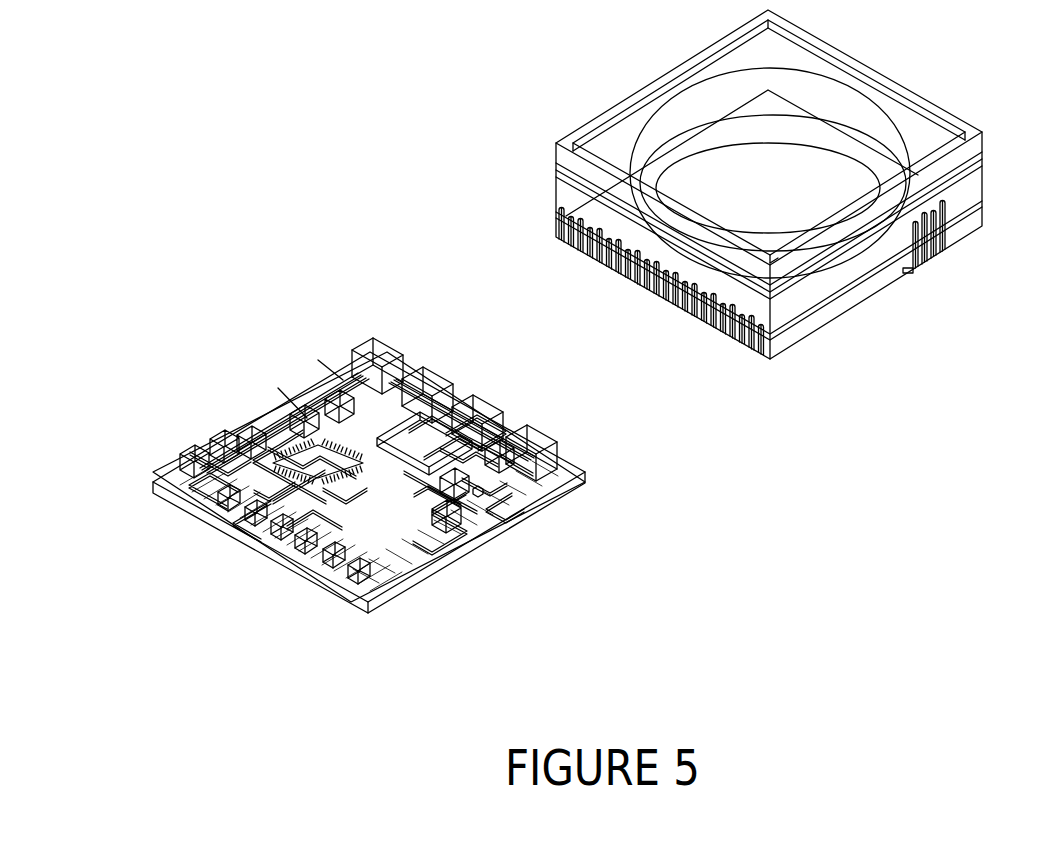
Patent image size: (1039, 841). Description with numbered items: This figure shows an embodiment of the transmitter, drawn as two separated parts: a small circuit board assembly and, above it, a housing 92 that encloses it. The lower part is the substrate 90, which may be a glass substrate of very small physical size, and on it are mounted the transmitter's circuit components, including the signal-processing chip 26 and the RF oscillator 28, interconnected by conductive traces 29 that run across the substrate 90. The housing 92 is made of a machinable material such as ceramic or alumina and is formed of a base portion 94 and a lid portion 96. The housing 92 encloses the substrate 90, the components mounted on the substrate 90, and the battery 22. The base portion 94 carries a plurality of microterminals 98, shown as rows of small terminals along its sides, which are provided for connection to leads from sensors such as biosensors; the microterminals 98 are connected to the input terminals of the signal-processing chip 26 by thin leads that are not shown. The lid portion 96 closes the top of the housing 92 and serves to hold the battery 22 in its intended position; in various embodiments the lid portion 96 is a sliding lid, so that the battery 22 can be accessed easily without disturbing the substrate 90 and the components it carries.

The battery 22 is at (737, 163).
The signal processing chip 26 is at (250, 442).
The RF oscillator 28 is at (478, 493).
The conductive traces 29 is at (537, 483).
The substrate 90 is at (537, 507).
The housing 92 is at (873, 68).
The base portion 94 is at (873, 283).
The lid portion 96 is at (930, 142).
The microterminals 98 is at (553, 222).